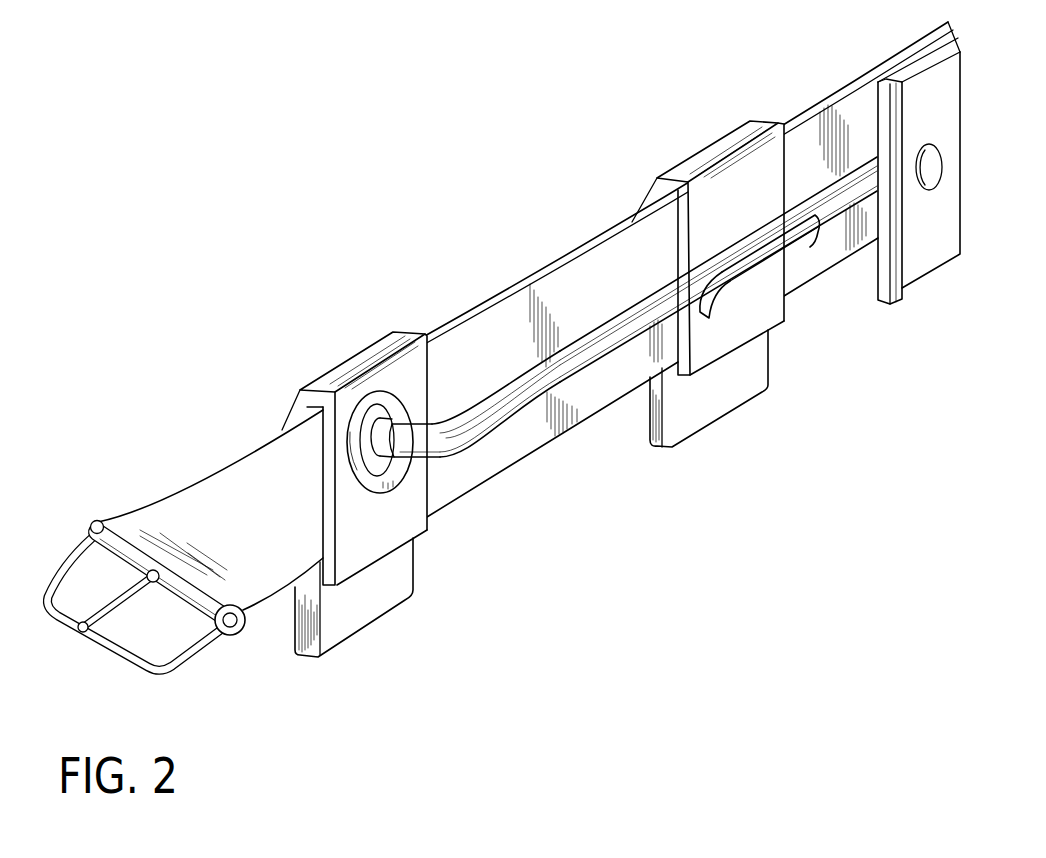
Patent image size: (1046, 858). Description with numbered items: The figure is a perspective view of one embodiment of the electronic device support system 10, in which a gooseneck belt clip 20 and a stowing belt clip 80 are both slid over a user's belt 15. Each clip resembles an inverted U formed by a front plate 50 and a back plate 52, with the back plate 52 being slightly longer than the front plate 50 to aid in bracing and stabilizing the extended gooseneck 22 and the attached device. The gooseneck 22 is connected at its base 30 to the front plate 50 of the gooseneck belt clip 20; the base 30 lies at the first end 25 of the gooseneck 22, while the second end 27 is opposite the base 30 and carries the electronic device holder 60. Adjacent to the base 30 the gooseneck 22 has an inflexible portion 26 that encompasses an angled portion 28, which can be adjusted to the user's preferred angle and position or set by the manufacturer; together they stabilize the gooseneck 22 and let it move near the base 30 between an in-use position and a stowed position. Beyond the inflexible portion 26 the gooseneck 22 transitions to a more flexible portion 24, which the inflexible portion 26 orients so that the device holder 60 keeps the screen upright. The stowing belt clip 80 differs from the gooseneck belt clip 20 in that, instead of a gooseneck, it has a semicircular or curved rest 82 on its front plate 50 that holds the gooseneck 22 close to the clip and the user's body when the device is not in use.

The electronic device support system 10 is at (296, 232).
The belt 15 is at (190, 491).
The gooseneck belt clip 20 is at (362, 357).
The gooseneck 22 is at (597, 360).
The flexible portion 24 is at (828, 195).
The first end 25 is at (437, 423).
The inflexible portion 26 is at (427, 425).
The second end 27 is at (858, 135).
The angled portion 28 is at (445, 460).
The base 30 is at (367, 407).
The front plate 50 is at (385, 540).
The back plate 52 is at (362, 613).
The electronic device holder 60 is at (938, 250).
The stowing belt clip 80 is at (703, 152).
The rest 82 is at (790, 253).